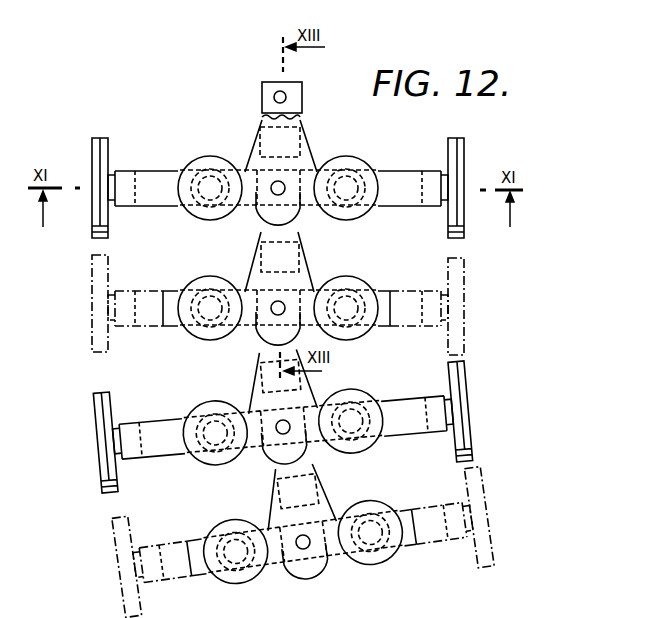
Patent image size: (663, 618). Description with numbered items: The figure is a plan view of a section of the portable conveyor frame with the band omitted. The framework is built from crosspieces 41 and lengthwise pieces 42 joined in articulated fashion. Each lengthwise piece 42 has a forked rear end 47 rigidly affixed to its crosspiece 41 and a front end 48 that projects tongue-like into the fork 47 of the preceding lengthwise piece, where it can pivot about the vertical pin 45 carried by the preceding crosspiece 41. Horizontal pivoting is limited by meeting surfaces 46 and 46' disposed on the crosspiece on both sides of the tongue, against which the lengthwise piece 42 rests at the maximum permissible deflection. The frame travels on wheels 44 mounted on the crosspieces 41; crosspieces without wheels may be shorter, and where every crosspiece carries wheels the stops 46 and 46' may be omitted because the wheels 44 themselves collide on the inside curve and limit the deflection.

The crosspiece 41 is at (393, 205).
The lengthwise piece 42 is at (258, 146).
The wheel 44 is at (101, 148).
The vertical pin 45 is at (275, 93).
The meeting surface 46 is at (265, 361).
The meeting surface 46' is at (319, 349).
The forked rear end 47 is at (325, 568).
The front end 48 is at (263, 108).